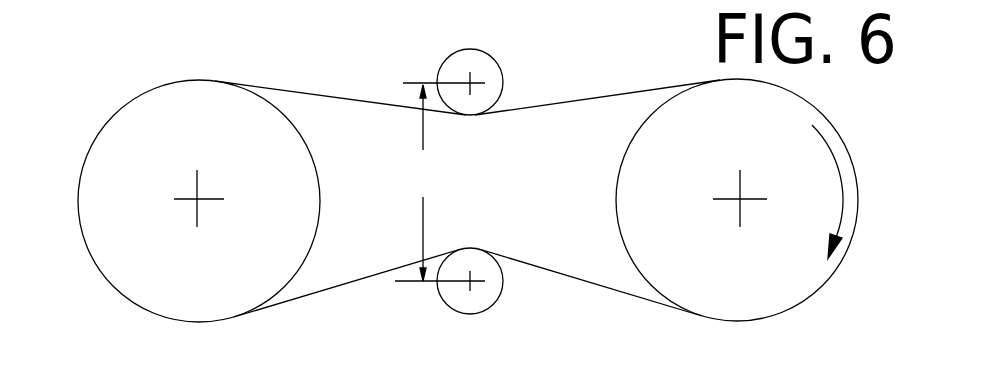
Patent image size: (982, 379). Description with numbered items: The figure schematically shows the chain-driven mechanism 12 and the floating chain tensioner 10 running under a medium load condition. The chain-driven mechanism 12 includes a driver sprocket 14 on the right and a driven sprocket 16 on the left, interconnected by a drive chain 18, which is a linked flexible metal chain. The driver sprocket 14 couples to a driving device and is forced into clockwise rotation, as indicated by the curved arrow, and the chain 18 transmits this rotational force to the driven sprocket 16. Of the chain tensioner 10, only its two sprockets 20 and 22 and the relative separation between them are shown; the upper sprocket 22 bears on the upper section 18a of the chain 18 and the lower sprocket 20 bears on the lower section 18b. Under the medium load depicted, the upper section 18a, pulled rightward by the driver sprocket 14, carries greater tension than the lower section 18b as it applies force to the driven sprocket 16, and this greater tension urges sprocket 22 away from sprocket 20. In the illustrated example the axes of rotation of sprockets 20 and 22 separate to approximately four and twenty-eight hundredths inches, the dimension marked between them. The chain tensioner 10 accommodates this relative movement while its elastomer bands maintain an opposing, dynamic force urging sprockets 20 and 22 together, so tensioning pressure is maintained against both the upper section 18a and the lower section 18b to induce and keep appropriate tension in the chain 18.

The floating chain tensioner 10 is at (400, 50).
The chain-driven mechanism 12 is at (133, 72).
The driver sprocket 14 is at (803, 282).
The driven sprocket 16 is at (188, 283).
The drive chain 18 is at (643, 85).
The upper section of chain 18a is at (557, 98).
The lower section of chain 18b is at (583, 283).
The sprocket 20 is at (457, 313).
The sprocket 22 is at (466, 49).